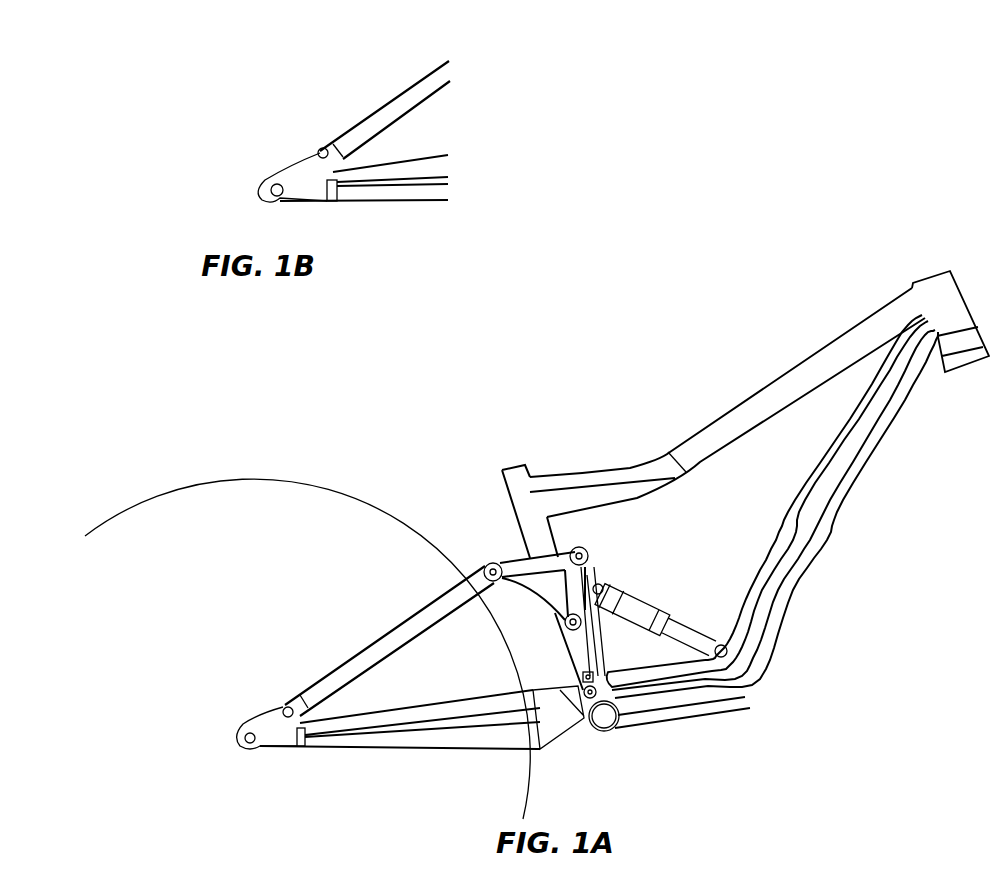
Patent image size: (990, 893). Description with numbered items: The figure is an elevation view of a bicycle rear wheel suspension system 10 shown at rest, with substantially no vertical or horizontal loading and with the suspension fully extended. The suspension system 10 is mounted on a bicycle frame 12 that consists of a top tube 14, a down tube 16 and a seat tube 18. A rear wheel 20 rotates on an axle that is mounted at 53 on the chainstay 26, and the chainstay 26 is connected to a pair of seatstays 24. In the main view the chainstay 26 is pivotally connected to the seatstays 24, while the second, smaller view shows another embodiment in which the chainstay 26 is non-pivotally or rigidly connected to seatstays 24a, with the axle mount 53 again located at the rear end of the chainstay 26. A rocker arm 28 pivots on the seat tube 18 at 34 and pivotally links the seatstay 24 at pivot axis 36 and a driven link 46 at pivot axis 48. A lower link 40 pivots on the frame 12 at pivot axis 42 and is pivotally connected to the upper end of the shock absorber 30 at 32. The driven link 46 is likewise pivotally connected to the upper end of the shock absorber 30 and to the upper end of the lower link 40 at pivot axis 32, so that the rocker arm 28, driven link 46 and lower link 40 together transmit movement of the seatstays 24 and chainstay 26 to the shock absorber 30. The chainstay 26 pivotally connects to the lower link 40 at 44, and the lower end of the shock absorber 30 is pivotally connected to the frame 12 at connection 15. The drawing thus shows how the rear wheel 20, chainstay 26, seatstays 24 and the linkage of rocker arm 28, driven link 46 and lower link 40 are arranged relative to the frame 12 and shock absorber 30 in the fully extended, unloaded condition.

In FIG. 1B, the rear wheel suspension system 10 is at (413, 207).
In FIG. 1A, the rear wheel suspension system 10 is at (375, 760).
In FIG. 1A, the bicycle frame 12 is at (693, 430).
In FIG. 1A, the top tube 14 is at (742, 441).
In FIG. 1A, the connection 15 is at (716, 645).
In FIG. 1A, the down tube 16 is at (842, 502).
In FIG. 1A, the seat tube 18 is at (502, 488).
In FIG. 1A, the rear wheel 20 is at (208, 478).
In FIG. 1A, the seatstays 24 is at (380, 630).
In FIG. 1B, the seatstays 24a is at (425, 73).
In FIG. 1A, the chainstay 26 is at (565, 725).
In FIG. 1A, the rocker arm 28 is at (522, 557).
In FIG. 1A, the shock absorber 30 is at (655, 602).
In FIG. 1A, the pivot axis 32 is at (600, 587).
In FIG. 1A, the pivot 34 is at (563, 621).
In FIG. 1A, the pivot axis 36 is at (485, 568).
In FIG. 1A, the lower link 40 is at (613, 645).
In FIG. 1A, the pivot axis 42 is at (580, 664).
In FIG. 1A, the pivot 44 is at (580, 687).
In FIG. 1A, the driven link 46 is at (591, 574).
In FIG. 1A, the pivot axis 48 is at (578, 552).
In FIG. 1B, the axle mount 53 is at (260, 193).
In FIG. 1A, the axle mount 53 is at (240, 738).